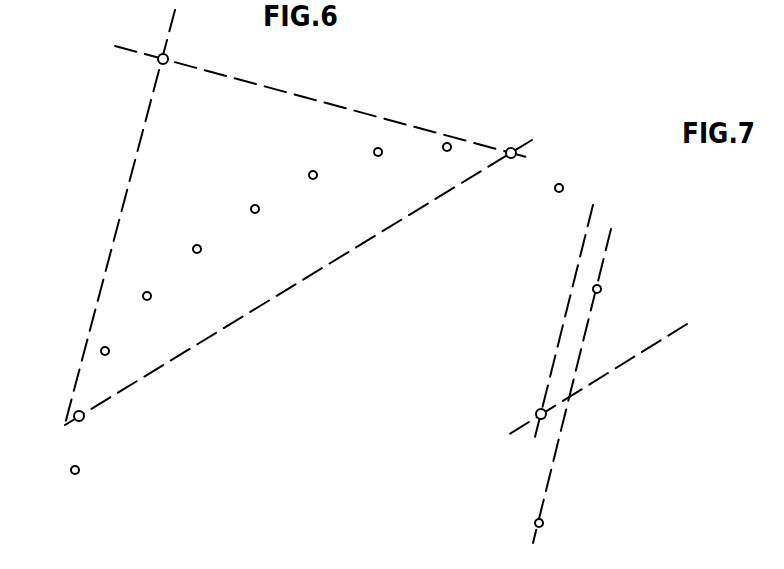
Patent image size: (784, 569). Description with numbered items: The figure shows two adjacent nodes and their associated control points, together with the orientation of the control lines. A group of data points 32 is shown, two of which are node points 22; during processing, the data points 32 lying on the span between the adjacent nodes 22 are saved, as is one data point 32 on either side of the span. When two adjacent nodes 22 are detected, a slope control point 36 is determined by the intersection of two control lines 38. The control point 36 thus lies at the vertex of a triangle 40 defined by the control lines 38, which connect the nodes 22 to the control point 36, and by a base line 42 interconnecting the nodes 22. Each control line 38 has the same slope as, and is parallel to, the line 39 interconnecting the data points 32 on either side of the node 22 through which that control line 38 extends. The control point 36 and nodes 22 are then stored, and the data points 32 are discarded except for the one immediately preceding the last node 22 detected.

In FIG. 6, the node point 22 is at (513, 149).
In FIG. 7, the node point 22 is at (538, 411).
In FIG. 6, the data point 32 is at (311, 172).
In FIG. 7, the data point 32 is at (601, 289).
In FIG. 6, the slope control point 36 is at (161, 54).
In FIG. 6, the control line 38 is at (297, 94).
In FIG. 7, the control line 38 is at (565, 320).
In FIG. 7, the line interconnecting data points 39 is at (557, 453).
In FIG. 6, the triangle 40 is at (162, 113).
In FIG. 6, the base line 42 is at (292, 286).
In FIG. 7, the base line 42 is at (662, 341).